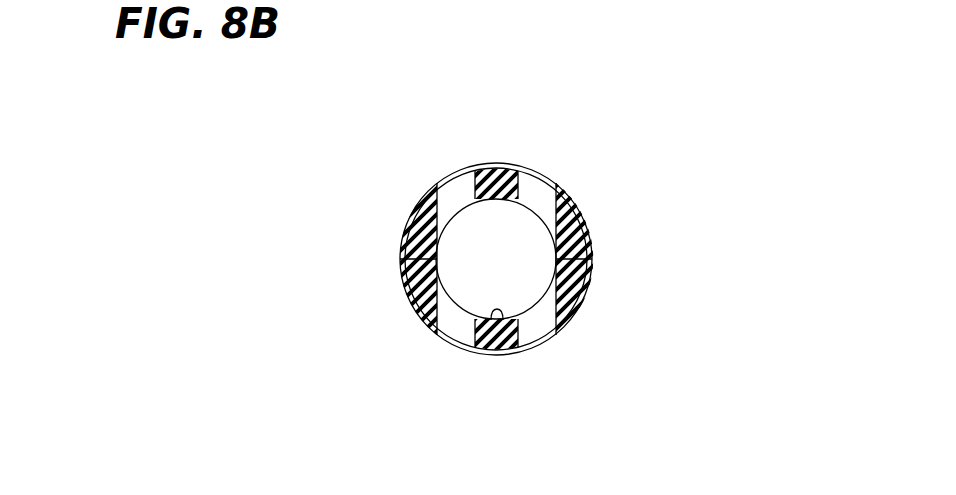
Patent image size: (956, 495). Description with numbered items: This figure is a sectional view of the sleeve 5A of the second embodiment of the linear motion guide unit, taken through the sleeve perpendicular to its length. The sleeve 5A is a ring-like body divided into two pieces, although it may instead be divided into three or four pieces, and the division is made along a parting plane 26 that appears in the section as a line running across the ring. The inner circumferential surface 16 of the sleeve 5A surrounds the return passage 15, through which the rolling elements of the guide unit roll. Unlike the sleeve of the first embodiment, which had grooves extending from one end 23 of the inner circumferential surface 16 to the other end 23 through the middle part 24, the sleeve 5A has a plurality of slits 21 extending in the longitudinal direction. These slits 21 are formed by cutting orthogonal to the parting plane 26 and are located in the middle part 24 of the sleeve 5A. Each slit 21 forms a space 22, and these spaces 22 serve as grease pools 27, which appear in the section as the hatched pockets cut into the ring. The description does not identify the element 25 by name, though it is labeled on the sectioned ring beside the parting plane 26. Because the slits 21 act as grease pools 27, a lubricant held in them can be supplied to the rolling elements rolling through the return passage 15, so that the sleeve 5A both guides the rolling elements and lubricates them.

The sleeve 5A is at (581, 184).
The return passage 15 is at (513, 256).
The inner circumferential surface 16 is at (503, 321).
The slits 21 is at (452, 184).
The spaces 22 is at (552, 185).
The end of the inner circumferential surface 23 is at (407, 232).
The middle part 24 is at (585, 262).
The left side magnet 25 is at (425, 212).
The parting plane 26 is at (405, 260).
The grease pools 27 is at (463, 343).